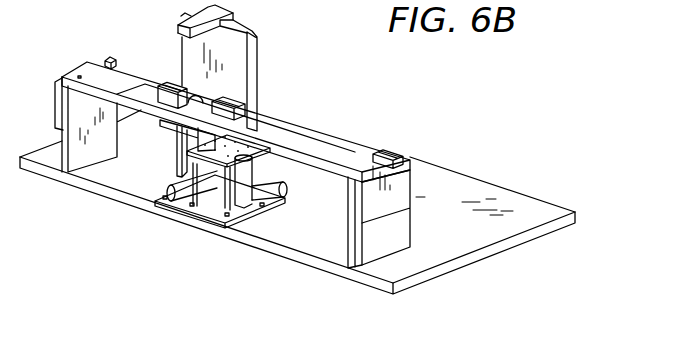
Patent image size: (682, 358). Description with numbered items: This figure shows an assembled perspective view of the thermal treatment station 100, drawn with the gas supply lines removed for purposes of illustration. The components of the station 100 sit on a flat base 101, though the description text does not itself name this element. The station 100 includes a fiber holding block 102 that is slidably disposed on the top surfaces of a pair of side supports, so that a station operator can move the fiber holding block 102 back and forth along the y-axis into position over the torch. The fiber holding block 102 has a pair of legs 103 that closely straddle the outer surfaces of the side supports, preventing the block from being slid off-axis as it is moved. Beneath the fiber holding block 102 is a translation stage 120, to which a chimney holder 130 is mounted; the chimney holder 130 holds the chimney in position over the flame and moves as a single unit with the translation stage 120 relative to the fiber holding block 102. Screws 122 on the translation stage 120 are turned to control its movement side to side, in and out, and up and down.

The thermal treatment station 100 is at (479, 91).
The base plate 101 is at (538, 200).
The fiber holding block 102 is at (355, 152).
The legs 103 is at (398, 188).
The translation stage 120 is at (213, 199).
The screws 122 is at (165, 192).
The chimney holder 130 is at (259, 70).